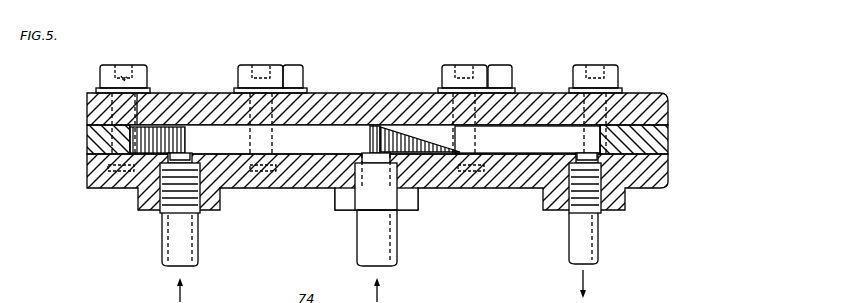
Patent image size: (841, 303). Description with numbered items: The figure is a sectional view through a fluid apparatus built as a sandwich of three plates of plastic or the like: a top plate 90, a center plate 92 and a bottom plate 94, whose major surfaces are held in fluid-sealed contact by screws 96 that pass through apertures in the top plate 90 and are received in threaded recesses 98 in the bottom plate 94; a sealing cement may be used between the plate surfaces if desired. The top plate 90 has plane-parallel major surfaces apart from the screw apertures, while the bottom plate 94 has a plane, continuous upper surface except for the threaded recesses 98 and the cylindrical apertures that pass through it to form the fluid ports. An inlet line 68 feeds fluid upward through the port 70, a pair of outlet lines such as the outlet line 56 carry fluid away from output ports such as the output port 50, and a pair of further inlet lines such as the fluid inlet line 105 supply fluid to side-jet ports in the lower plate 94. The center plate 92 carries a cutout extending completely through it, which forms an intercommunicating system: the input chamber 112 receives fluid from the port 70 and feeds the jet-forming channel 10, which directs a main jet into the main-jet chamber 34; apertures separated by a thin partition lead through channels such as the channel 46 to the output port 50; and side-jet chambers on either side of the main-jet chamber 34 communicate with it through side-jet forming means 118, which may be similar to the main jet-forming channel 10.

The jet-forming channel 10 is at (340, 132).
The main-jet chamber 34 is at (396, 130).
The channel 46 is at (518, 130).
The output port 50 is at (583, 152).
The outlet line 56 is at (598, 246).
The inlet line 68 is at (160, 248).
The port 70 is at (185, 154).
The top plate 90 is at (668, 108).
The center plate 92 is at (668, 139).
The bottom plate 94 is at (668, 172).
The screws 96 is at (148, 66).
The threaded recesses 98 is at (268, 188).
The fluid inlet line 105 is at (397, 250).
The input chamber 112 is at (178, 128).
The side-jet forming means 118 is at (376, 126).